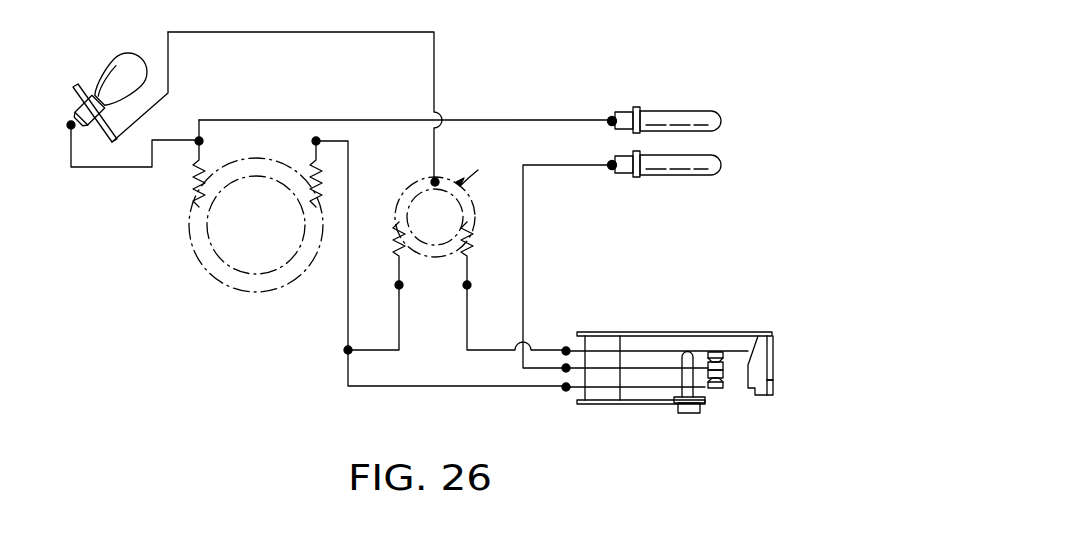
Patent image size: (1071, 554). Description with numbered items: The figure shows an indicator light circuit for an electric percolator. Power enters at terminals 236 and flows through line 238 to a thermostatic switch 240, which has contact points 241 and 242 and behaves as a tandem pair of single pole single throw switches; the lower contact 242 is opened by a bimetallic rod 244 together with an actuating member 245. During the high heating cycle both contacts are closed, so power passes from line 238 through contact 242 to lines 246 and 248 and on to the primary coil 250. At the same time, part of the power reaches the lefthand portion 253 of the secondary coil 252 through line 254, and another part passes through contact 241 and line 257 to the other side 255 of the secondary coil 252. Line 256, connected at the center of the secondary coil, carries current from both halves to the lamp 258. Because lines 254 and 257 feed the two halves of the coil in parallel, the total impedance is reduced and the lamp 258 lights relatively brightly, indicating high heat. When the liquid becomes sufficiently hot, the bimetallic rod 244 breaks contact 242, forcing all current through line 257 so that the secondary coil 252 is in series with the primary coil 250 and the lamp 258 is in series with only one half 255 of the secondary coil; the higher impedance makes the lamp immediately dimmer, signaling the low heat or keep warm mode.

The terminals 236 is at (721, 171).
The line 238 is at (523, 230).
The thermostatic switch 240 is at (780, 352).
The contact point 241 is at (727, 343).
The contact point 242 is at (727, 381).
The bimetallic rod 244 is at (600, 332).
The actuating member 245 is at (790, 384).
The line 246 is at (440, 388).
The line 248 is at (348, 275).
The primary coil 250 is at (200, 265).
The secondary coil 252 is at (392, 193).
The lefthand portion of secondary coil 253 is at (392, 209).
The line 254 is at (372, 352).
The other side of secondary coil 255 is at (495, 212).
The line 256 is at (276, 32).
The line 257 is at (468, 300).
The lamp 258 is at (104, 67).